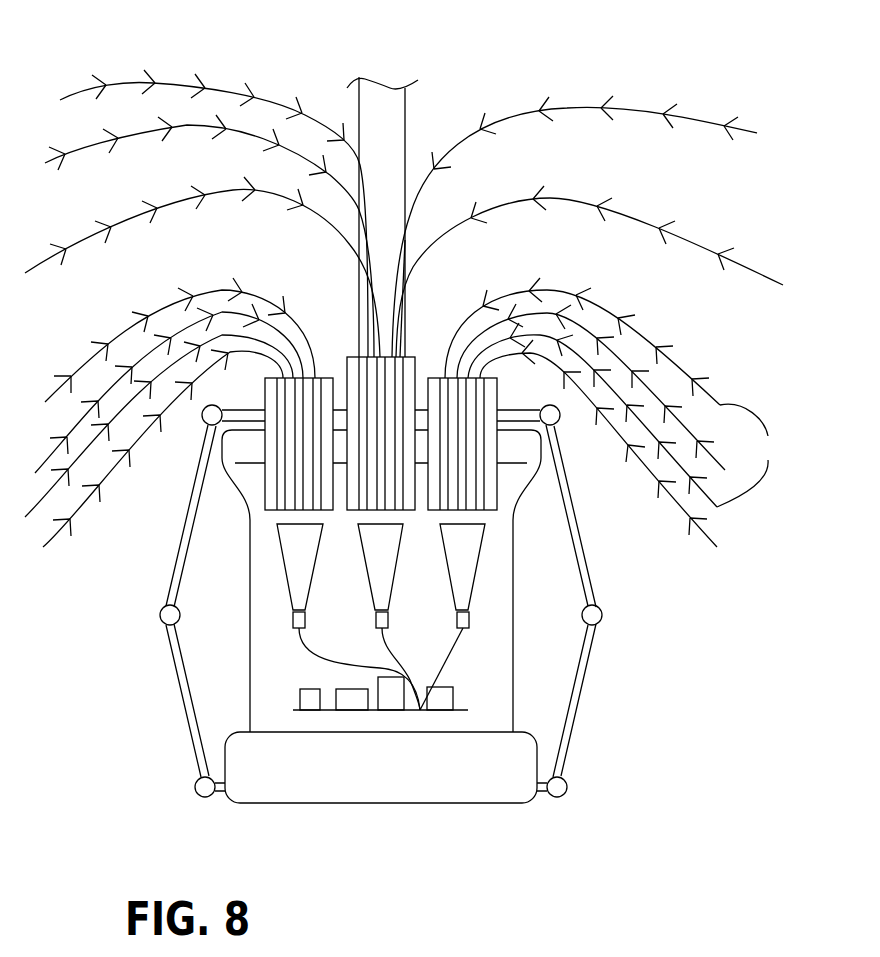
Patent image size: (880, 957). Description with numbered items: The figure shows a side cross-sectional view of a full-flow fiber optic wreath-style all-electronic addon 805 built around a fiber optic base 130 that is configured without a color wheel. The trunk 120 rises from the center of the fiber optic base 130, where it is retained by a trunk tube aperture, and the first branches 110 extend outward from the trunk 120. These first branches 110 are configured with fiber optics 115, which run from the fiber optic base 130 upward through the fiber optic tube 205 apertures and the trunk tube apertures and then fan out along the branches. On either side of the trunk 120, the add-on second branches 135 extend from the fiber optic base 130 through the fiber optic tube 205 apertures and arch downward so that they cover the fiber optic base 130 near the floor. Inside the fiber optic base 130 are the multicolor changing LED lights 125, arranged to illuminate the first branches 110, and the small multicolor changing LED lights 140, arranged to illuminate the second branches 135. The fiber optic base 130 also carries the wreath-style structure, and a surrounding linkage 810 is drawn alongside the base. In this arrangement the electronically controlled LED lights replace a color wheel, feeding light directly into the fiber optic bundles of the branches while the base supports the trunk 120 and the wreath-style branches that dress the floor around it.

The full-flow fiber optic wreath-style all-electronic addon 805 is at (141, 26).
The trunk 120 is at (383, 92).
The fiber optics 115 is at (700, 128).
The first branches 110 is at (758, 267).
The add-on second branches 135 is at (713, 453).
The fiber optic tube 205 is at (233, 447).
The linkage 810 is at (588, 670).
The multicolor changing LED lights 125 is at (372, 593).
The small multicolor changing LED lights 140 is at (293, 600).
The fiber optic base 130 is at (447, 803).